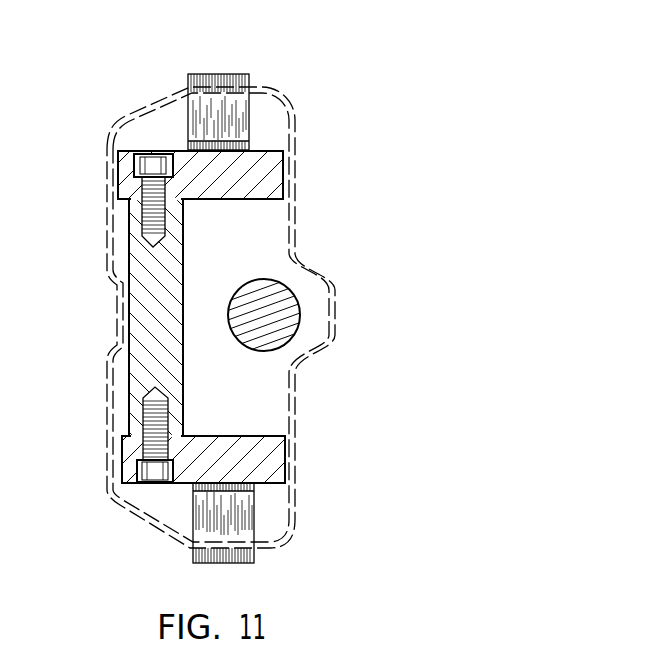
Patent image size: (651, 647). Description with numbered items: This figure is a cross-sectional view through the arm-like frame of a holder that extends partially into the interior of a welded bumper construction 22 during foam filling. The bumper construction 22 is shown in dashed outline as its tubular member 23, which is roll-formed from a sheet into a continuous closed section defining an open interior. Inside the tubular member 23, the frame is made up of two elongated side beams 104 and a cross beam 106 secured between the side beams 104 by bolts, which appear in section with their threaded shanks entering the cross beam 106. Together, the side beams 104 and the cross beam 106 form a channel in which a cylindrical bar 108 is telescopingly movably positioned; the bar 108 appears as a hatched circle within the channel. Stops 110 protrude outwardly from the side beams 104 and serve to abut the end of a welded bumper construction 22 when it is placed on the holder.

The bumper construction 22 is at (136, 516).
The tubular member 23 is at (288, 102).
The side beams 104 is at (276, 178).
The cross beam 106 is at (135, 320).
The cylindrical bar 108 is at (299, 297).
The stops 110 is at (221, 74).